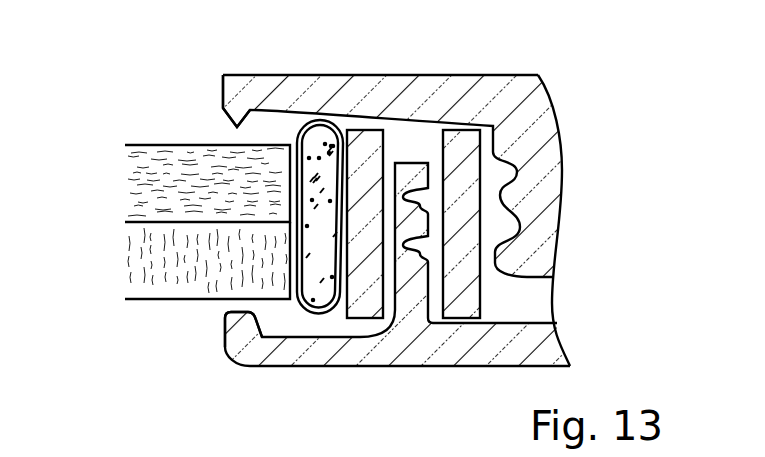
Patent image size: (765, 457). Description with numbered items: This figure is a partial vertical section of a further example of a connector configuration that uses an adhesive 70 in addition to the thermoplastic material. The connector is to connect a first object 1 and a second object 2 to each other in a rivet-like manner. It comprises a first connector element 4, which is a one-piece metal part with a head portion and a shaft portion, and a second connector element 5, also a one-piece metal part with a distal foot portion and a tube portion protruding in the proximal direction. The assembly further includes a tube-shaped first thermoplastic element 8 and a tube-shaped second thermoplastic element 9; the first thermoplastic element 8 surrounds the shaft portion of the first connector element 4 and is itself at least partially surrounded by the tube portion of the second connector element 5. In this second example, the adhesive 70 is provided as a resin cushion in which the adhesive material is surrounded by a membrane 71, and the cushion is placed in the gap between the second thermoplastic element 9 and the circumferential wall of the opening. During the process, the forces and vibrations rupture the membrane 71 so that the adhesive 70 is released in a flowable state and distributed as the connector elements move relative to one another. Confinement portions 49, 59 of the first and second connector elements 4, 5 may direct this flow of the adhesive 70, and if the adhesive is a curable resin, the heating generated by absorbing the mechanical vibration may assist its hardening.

The first object 1 is at (197, 188).
The second object 2 is at (190, 260).
The first connector element 4 is at (464, 102).
The second connector element 5 is at (416, 333).
The first thermoplastic element 8 is at (458, 162).
The second thermoplastic element 9 is at (360, 180).
The confinement portion 49 is at (240, 107).
The confinement portion 59 is at (240, 317).
The adhesive 70 is at (317, 157).
The membrane 71 is at (297, 147).